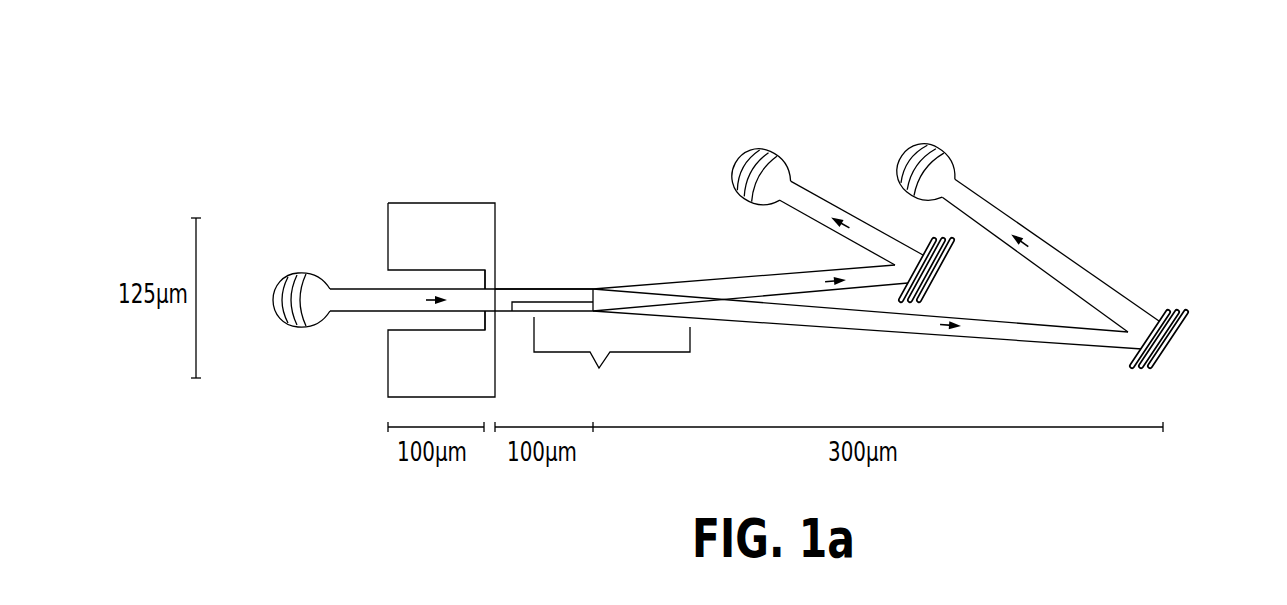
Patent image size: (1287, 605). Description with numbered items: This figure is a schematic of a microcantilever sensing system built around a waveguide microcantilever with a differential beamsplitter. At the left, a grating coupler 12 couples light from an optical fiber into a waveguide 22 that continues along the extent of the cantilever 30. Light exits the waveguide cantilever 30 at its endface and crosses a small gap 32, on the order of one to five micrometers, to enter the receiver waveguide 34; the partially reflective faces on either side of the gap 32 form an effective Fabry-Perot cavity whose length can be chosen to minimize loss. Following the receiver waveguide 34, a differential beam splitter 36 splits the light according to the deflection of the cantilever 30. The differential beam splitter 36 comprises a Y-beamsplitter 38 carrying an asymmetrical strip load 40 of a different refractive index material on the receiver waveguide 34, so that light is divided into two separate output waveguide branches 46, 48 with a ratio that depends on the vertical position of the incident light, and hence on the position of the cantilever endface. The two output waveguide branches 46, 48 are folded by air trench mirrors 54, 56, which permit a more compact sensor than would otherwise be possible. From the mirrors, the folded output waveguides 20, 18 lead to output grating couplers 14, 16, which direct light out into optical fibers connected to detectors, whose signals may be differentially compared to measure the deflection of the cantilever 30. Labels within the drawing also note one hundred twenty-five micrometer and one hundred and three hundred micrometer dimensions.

The grating coupler 12 is at (292, 290).
The output grating coupler 14 is at (748, 145).
The output grating coupler 16 is at (930, 147).
The second outlet channel 18 is at (1080, 285).
The first outlet channel 20 is at (822, 200).
The waveguide 22 is at (367, 297).
The cantilever 30 is at (453, 295).
The gap 32 is at (488, 300).
The receiver waveguide 34 is at (547, 293).
The differential beam splitter 36 is at (612, 360).
The Y-beamsplitter 38 is at (628, 297).
The asymmetrical strip load 40 is at (573, 305).
The output waveguide branch 46 is at (1007, 332).
The output waveguide branch 48 is at (768, 278).
The air trench mirror 54 is at (1172, 345).
The air trench mirror 56 is at (948, 267).